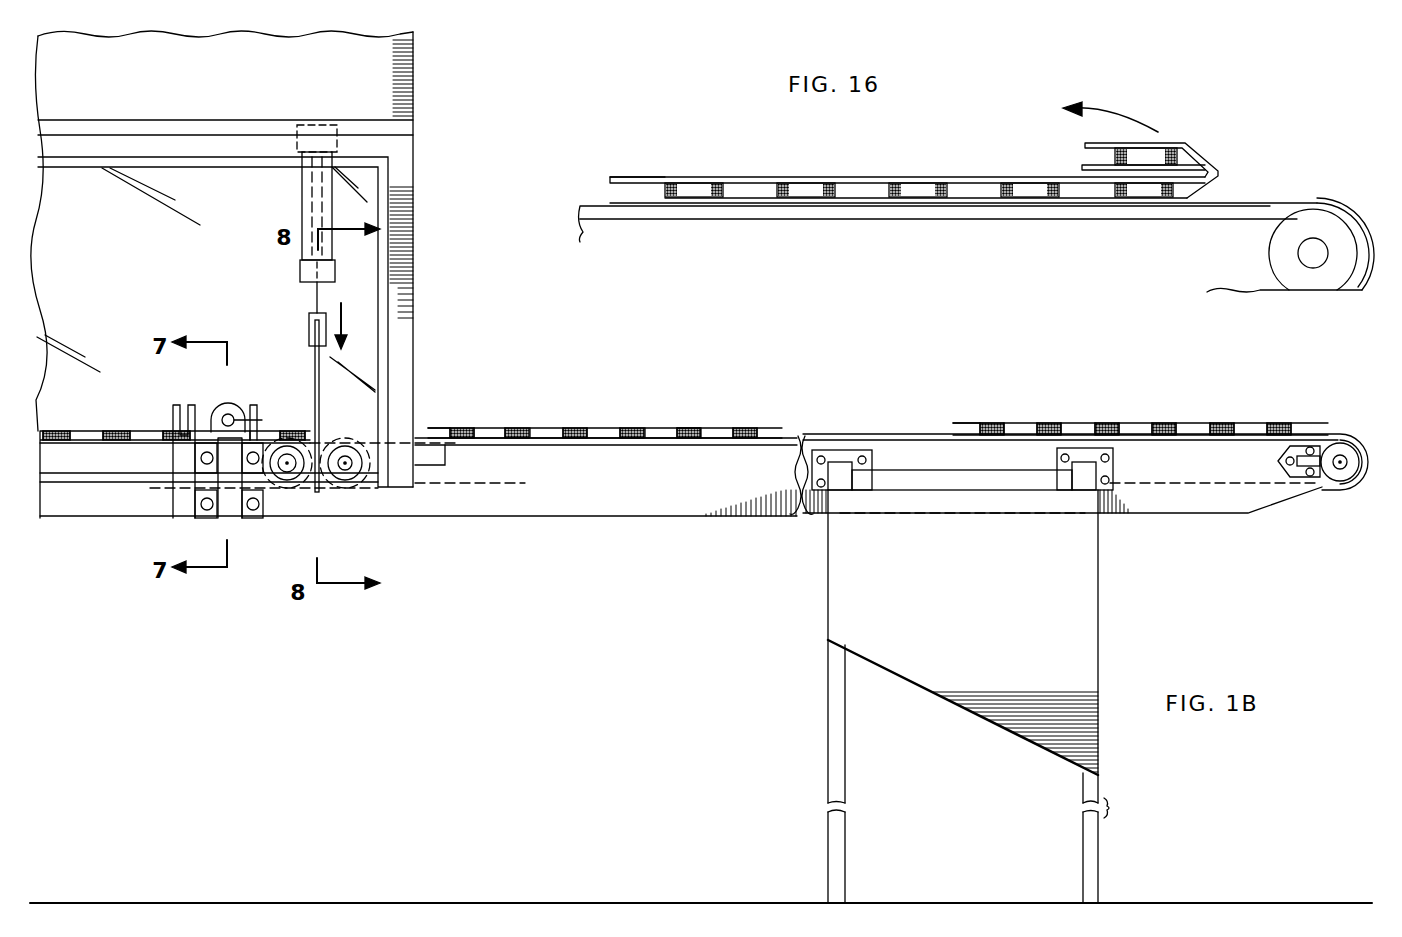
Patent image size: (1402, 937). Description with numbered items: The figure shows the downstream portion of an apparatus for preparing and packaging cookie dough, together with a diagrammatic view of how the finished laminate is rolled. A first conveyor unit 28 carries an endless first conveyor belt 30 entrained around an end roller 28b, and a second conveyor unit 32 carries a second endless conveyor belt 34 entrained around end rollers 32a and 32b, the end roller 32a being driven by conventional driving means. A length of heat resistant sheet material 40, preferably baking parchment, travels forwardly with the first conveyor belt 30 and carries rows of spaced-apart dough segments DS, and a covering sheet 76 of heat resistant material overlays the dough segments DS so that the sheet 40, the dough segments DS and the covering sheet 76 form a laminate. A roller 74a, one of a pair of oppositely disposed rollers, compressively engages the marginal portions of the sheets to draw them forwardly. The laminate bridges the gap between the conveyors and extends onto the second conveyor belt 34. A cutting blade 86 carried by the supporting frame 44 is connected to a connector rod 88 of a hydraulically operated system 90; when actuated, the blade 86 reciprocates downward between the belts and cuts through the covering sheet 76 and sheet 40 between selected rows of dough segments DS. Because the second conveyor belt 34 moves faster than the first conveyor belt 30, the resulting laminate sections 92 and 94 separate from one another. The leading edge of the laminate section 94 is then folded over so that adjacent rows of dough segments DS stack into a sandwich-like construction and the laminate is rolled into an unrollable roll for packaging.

In FIG. 1B, the first conveyor belt 30 is at (80, 438).
In FIG. 1B, the covering sheet 76 is at (145, 430).
In FIG. 16, the covering sheet 76 is at (752, 177).
In FIG. 1B, the dough segments DS is at (289, 430).
In FIG. 16, the dough segments DS is at (688, 190).
In FIG. 1B, the heat resistant sheet material 40 is at (148, 458).
In FIG. 16, the heat resistant sheet material 40 is at (753, 200).
In FIG. 1B, the second conveyor belt 34 is at (607, 440).
In FIG. 16, the second conveyor belt 34 is at (1265, 200).
In FIG. 1B, the supporting frame 44 is at (670, 505).
In FIG. 1B, the roller 74a is at (226, 405).
In FIG. 1B, the first conveyor unit 28 is at (284, 497).
In FIG. 1B, the end roller 28b is at (290, 472).
In FIG. 1B, the end roller 32a is at (345, 455).
In FIG. 1B, the end roller 32b is at (1343, 482).
In FIG. 16, the end roller 32b is at (1298, 260).
In FIG. 1B, the second conveyor unit 32 is at (516, 412).
In FIG. 1B, the laminate section 92 is at (696, 396).
In FIG. 1B, the laminate section 94 is at (1008, 418).
In FIG. 16, the laminate section 94 is at (640, 146).
In FIG. 1B, the hydraulically operated system 90 is at (300, 186).
In FIG. 1B, the connector rod 88 is at (312, 300).
In FIG. 1B, the cutting blade 86 is at (313, 365).